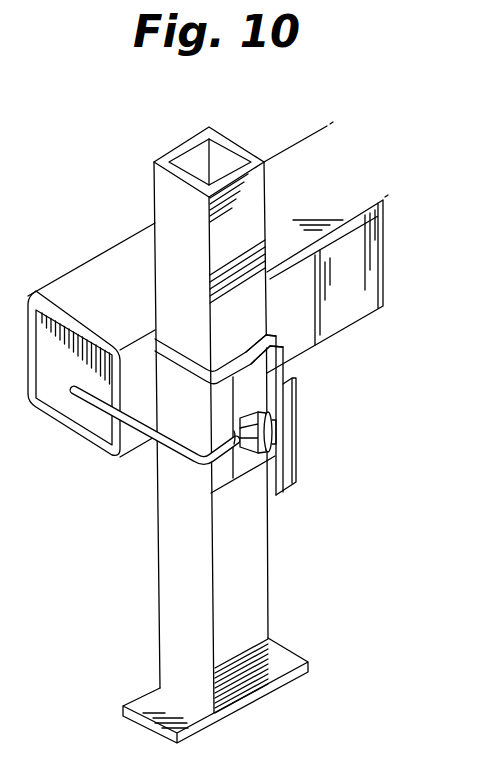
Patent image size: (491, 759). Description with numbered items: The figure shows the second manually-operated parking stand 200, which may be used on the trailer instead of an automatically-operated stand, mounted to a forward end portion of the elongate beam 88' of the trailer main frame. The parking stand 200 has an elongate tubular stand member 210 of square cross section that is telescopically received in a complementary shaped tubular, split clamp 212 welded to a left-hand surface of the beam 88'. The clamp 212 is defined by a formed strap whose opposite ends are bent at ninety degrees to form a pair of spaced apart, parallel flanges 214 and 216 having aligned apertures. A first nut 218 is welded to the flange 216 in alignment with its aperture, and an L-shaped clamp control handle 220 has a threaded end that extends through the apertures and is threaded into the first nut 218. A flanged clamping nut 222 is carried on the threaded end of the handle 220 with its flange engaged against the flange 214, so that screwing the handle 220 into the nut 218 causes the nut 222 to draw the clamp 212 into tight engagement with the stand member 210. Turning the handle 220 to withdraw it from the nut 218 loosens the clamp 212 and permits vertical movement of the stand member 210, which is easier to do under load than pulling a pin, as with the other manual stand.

The elongate beam 88' is at (208, 289).
The second manually-operated parking stand 200 is at (128, 621).
The tubular stand member 210 is at (157, 558).
The split clamp 212 is at (150, 363).
The flange 214 is at (268, 490).
The flange 216 is at (297, 483).
The first nut 218 is at (298, 379).
The L-shaped clamp control handle 220 is at (137, 430).
The flanged clamping nut 222 is at (273, 458).